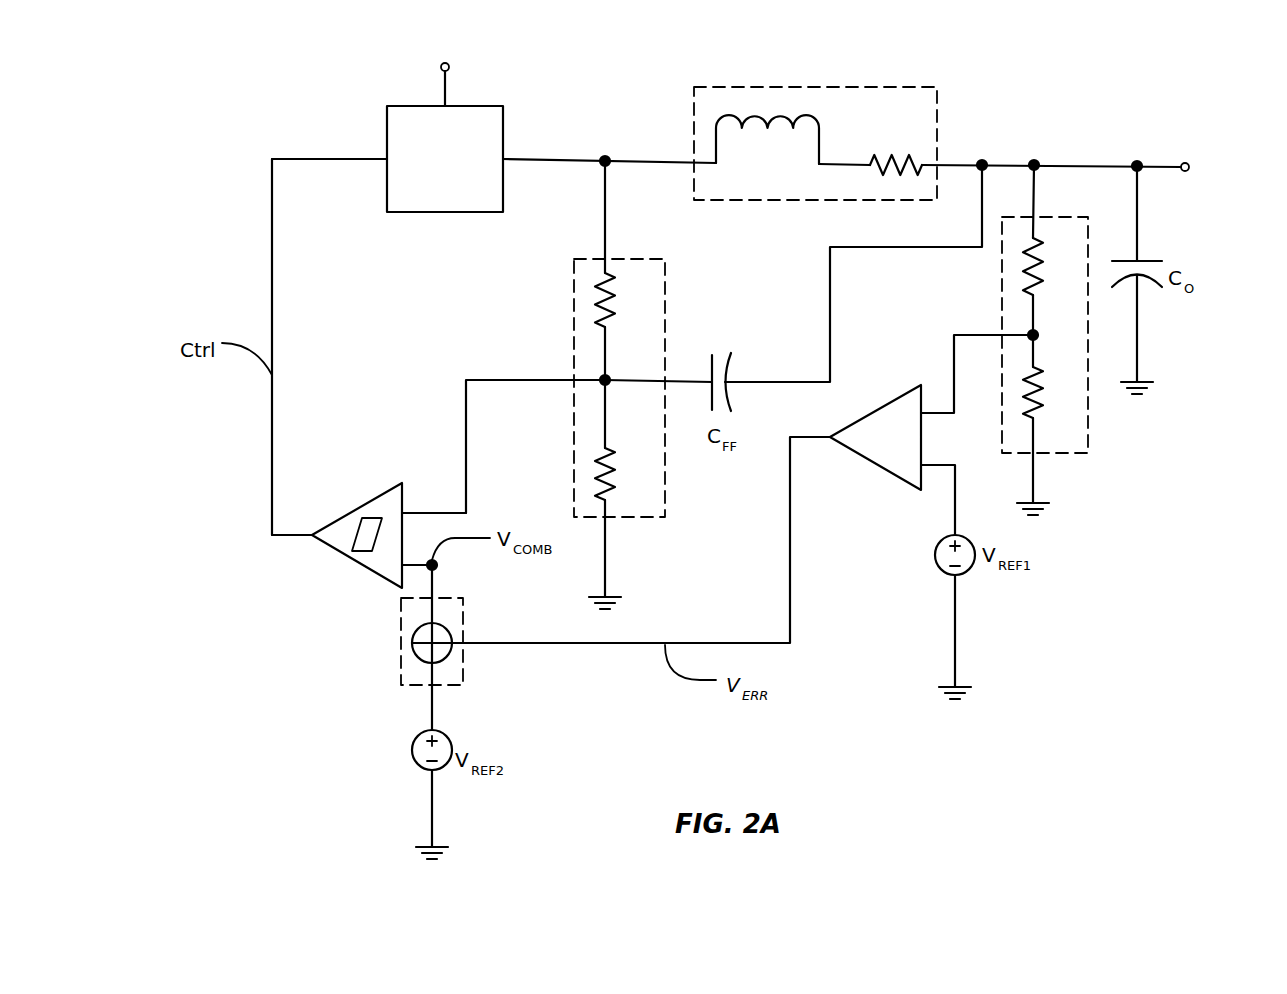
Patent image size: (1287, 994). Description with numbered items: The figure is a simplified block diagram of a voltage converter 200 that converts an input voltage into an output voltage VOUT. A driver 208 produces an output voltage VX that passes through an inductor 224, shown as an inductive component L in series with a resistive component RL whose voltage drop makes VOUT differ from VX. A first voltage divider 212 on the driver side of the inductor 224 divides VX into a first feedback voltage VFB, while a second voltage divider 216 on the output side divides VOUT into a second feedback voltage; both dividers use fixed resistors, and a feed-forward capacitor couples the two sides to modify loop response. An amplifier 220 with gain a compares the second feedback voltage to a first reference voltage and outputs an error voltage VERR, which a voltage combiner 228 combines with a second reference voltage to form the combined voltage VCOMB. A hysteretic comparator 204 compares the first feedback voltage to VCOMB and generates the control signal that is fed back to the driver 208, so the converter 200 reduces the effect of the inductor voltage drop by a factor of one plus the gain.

The voltage converter 200 is at (1123, 90).
The hysteretic comparator 204 is at (350, 556).
The driver 208 is at (385, 118).
The first voltage divider 212 is at (574, 290).
The second voltage divider 216 is at (1002, 297).
The amplifier 220 is at (830, 433).
The inductor 224 is at (937, 92).
The voltage combiner 228 is at (401, 663).